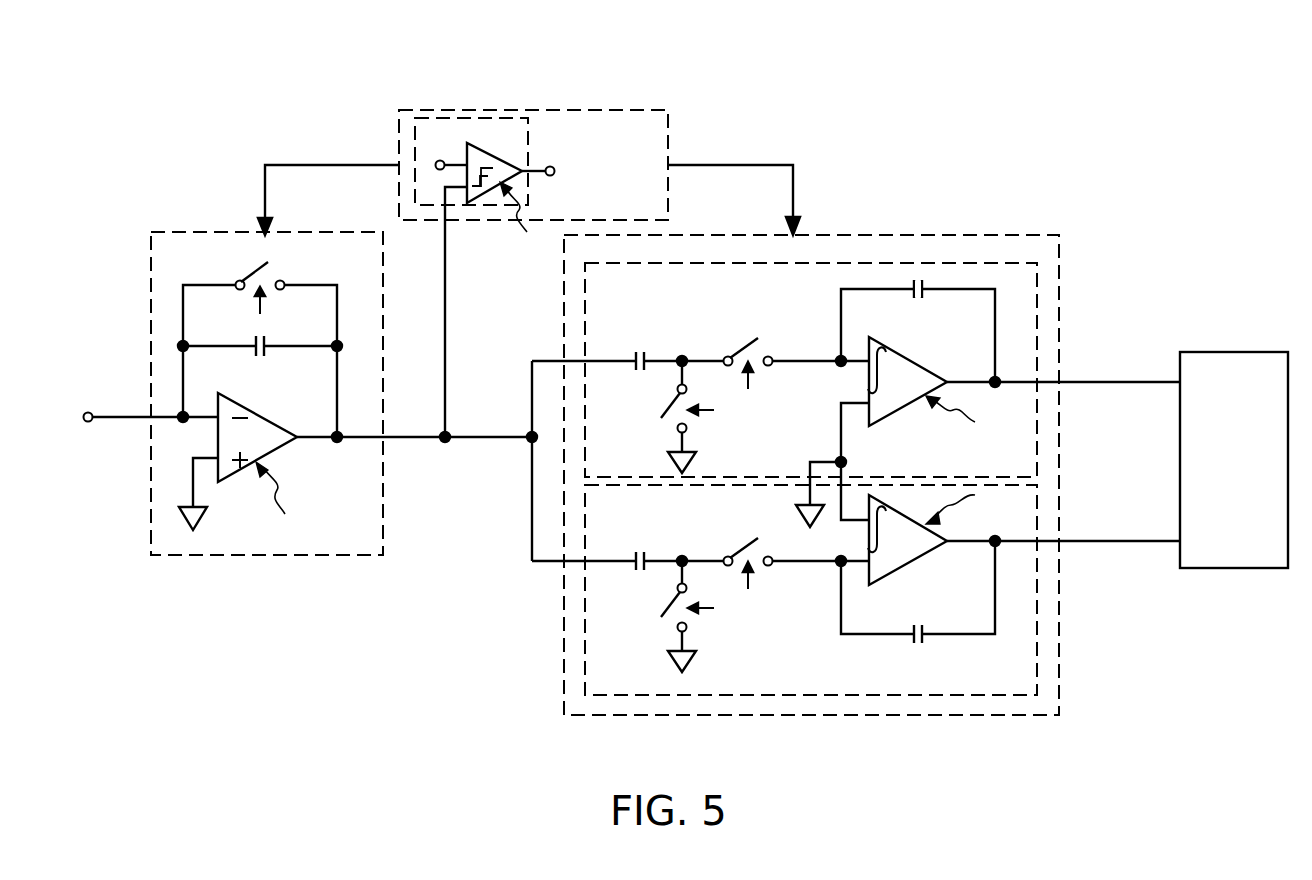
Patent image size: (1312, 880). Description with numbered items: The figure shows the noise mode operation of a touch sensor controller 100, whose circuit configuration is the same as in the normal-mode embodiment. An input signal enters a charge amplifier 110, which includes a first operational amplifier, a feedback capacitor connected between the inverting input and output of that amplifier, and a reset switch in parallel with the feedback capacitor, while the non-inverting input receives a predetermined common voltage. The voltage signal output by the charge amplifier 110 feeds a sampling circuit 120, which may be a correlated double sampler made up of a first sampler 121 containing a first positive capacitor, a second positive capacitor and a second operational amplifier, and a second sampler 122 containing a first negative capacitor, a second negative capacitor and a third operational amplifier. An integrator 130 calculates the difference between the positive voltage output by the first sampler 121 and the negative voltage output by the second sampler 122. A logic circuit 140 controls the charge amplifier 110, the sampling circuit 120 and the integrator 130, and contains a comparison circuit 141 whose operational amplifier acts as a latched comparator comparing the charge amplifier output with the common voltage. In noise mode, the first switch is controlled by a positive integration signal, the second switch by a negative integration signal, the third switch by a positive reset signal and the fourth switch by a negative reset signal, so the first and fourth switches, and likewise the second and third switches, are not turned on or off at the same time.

The touch sensor controller 100 is at (1081, 139).
The charge amplifier 110 is at (183, 557).
The sampling circuit 120 is at (1059, 700).
The first sampler 121 is at (1037, 296).
The second sampler 122 is at (1037, 652).
The integrator 130 is at (1252, 352).
The logic circuit 140 is at (668, 122).
The comparison circuit 141 is at (478, 207).